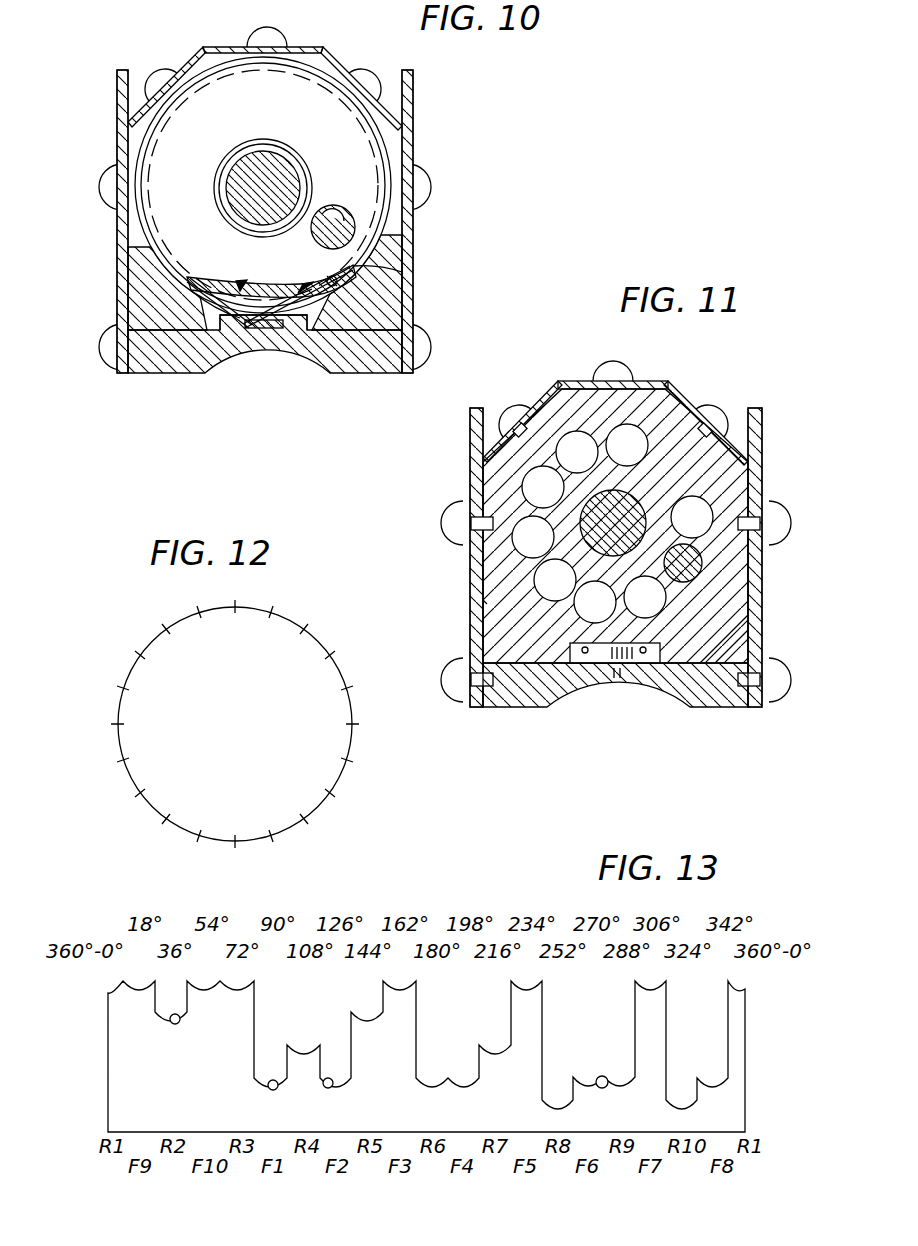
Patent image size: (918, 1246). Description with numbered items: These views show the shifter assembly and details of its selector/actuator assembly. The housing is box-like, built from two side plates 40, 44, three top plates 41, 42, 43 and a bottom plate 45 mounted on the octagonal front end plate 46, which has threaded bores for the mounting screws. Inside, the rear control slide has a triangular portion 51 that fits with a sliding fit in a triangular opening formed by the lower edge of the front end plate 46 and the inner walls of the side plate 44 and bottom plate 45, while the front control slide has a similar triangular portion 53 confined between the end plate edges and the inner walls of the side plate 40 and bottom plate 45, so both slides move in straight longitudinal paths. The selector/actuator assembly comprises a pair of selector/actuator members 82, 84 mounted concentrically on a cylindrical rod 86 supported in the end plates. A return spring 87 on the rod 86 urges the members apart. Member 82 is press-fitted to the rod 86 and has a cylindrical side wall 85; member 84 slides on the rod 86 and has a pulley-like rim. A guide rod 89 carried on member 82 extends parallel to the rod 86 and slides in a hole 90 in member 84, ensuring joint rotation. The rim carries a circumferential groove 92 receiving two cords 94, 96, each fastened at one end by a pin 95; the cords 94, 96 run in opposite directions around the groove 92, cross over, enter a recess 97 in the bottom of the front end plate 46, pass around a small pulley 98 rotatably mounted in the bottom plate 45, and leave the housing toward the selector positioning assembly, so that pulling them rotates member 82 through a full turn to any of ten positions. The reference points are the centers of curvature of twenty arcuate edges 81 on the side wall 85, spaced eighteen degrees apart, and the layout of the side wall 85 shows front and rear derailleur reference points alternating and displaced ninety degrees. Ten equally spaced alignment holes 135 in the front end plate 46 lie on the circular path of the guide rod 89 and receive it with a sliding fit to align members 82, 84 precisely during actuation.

In FIG. 10, the side plate 40 is at (117, 104).
In FIG. 11, the side plate 40 is at (469, 467).
In FIG. 10, the top plate 41 is at (200, 48).
In FIG. 11, the top plate 41 is at (548, 388).
In FIG. 10, the top plate 42 is at (238, 46).
In FIG. 11, the top plate 42 is at (647, 381).
In FIG. 10, the top plate 43 is at (335, 62).
In FIG. 11, the top plate 43 is at (672, 405).
In FIG. 10, the side plate 44 is at (415, 93).
In FIG. 11, the side plate 44 is at (762, 420).
In FIG. 10, the bottom plate 45 is at (155, 365).
In FIG. 11, the bottom plate 45 is at (728, 700).
In FIG. 11, the front end plate 46 is at (483, 480).
In FIG. 10, the triangular portion 51 is at (390, 318).
In FIG. 11, the triangular portion 51 is at (733, 638).
In FIG. 10, the triangular portion 53 is at (135, 295).
In FIG. 11, the triangular portion 53 is at (487, 627).
In FIG. 13, the arcuate edges 81 is at (180, 1022).
In FIG. 12, the selector/actuator member 82 is at (238, 723).
In FIG. 10, the selector/actuator member 84 is at (440, 152).
In FIG. 13, the cylindrical side wall 85 is at (125, 1063).
In FIG. 10, the cylindrical rod 86 is at (262, 160).
In FIG. 11, the cylindrical rod 86 is at (640, 503).
In FIG. 10, the return spring 87 is at (305, 171).
In FIG. 10, the guide rod 89 is at (325, 222).
In FIG. 11, the guide rod 89 is at (702, 563).
In FIG. 10, the hole 90 is at (345, 218).
In FIG. 10, the groove 92 is at (347, 300).
In FIG. 10, the cord 94 is at (297, 307).
In FIG. 11, the cord 94 is at (585, 654).
In FIG. 10, the pin 95 is at (340, 283).
In FIG. 10, the cord 96 is at (360, 270).
In FIG. 11, the cord 96 is at (620, 658).
In FIG. 10, the recess 97 is at (295, 328).
In FIG. 11, the recess 97 is at (650, 658).
In FIG. 10, the small pulley 98 is at (263, 330).
In FIG. 11, the small pulley 98 is at (597, 673).
In FIG. 11, the alignment holes 135 is at (617, 427).